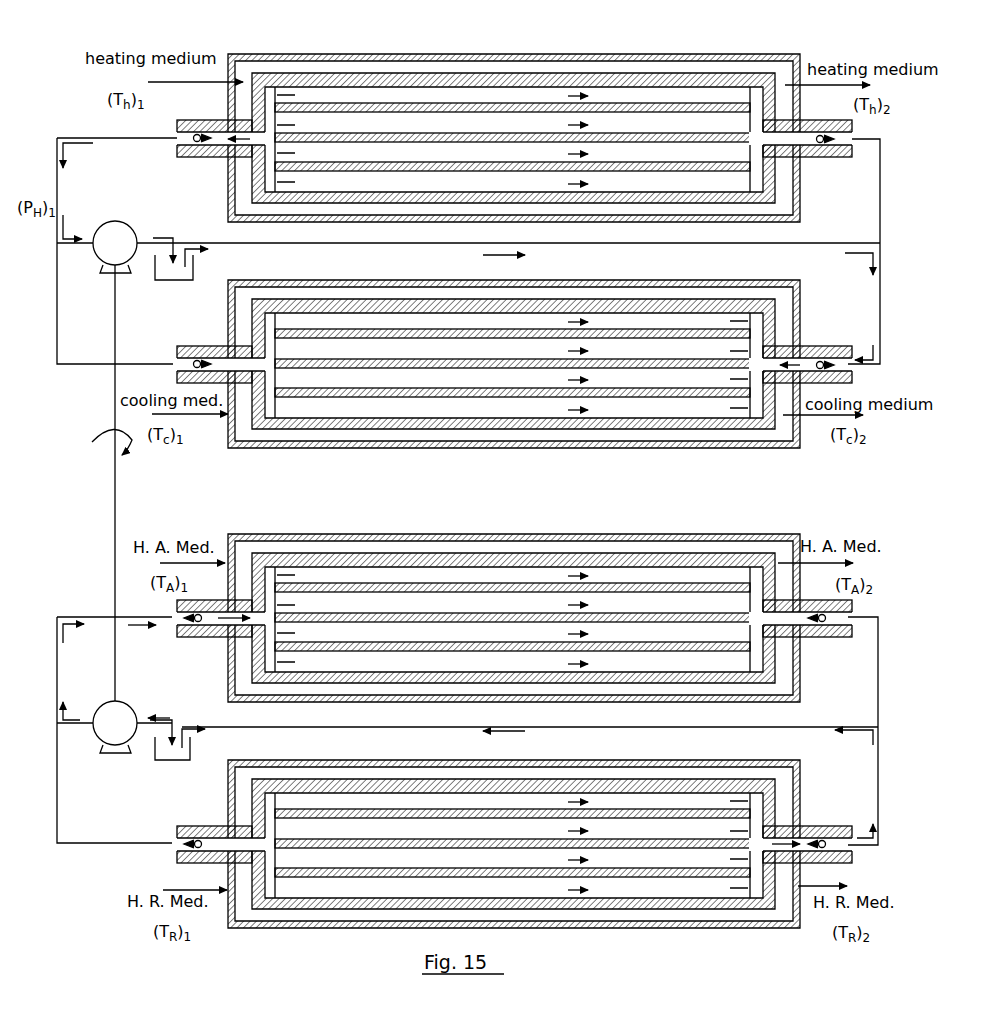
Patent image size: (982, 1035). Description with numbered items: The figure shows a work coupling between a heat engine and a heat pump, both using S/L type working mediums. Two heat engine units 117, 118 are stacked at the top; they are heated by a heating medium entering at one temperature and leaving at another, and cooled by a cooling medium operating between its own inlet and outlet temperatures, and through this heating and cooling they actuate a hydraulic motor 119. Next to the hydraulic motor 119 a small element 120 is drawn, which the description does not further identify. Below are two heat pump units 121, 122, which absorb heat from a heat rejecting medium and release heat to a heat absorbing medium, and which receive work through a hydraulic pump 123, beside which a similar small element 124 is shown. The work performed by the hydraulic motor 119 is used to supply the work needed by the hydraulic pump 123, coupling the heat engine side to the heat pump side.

The heat engine unit 117 is at (433, 53).
The heat engine unit 118 is at (431, 283).
The hydraulic motor 119 is at (120, 225).
The reservoir / trap 120 is at (182, 274).
The third heat exchanger (heat absorbing medium) 121 is at (425, 533).
The fourth heat exchanger (heat rejecting medium) 122 is at (425, 762).
The hydraulic pump 123 is at (100, 730).
The reservoir / trap 124 is at (168, 757).